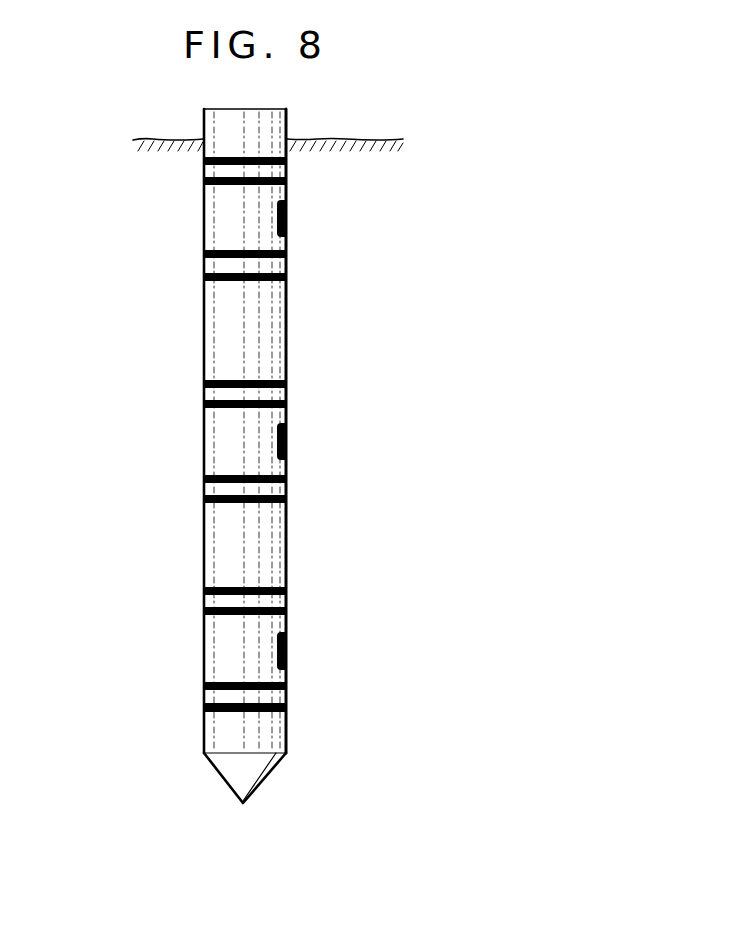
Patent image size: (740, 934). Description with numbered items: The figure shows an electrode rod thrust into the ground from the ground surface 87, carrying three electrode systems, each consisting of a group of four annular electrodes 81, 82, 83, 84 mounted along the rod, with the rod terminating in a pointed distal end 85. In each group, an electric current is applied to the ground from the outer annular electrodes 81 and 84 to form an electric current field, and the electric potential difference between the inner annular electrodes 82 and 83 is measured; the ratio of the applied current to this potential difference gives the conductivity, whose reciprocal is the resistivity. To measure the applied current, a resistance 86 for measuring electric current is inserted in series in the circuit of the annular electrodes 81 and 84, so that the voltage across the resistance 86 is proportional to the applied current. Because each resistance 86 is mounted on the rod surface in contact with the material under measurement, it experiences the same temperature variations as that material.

The annular electrode 81 is at (204, 161).
The annular electrode 82 is at (204, 184).
The annular electrode 83 is at (204, 254).
The annular electrode 84 is at (204, 278).
The distal end 85 is at (218, 771).
The resistance for measuring electric current 86 is at (287, 212).
The ground surface 87 is at (368, 139).